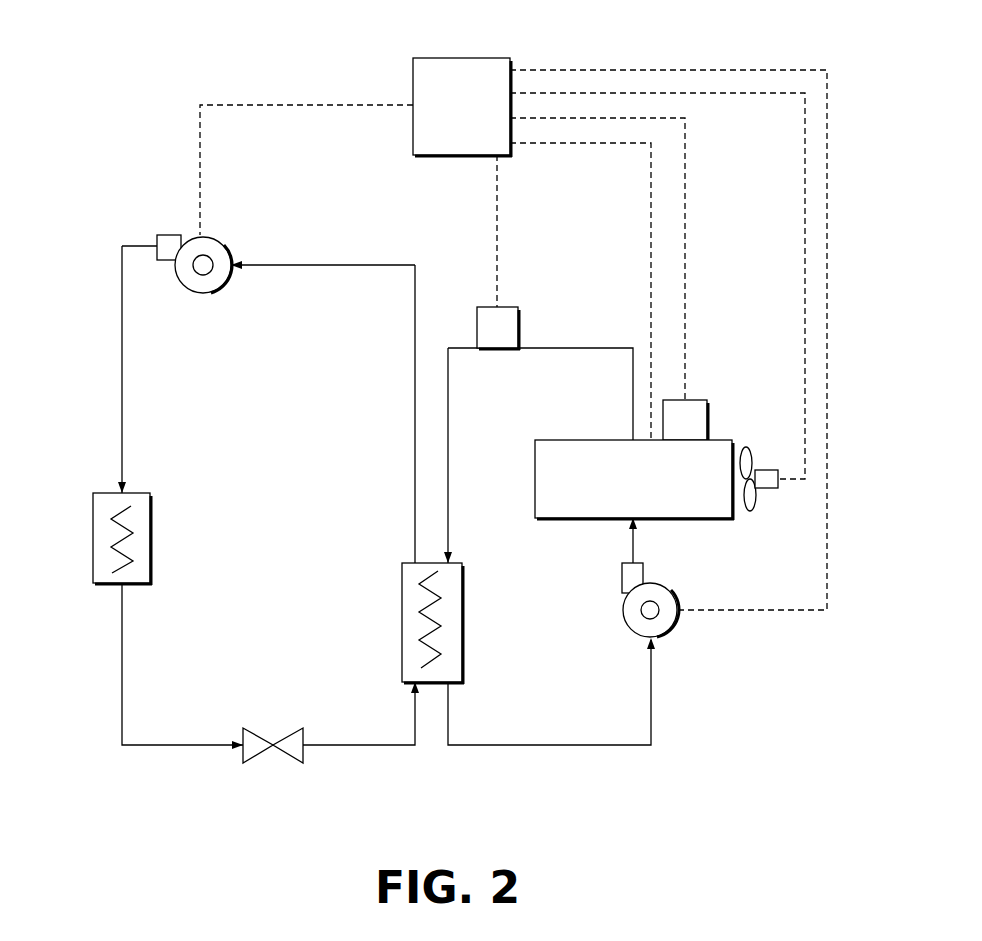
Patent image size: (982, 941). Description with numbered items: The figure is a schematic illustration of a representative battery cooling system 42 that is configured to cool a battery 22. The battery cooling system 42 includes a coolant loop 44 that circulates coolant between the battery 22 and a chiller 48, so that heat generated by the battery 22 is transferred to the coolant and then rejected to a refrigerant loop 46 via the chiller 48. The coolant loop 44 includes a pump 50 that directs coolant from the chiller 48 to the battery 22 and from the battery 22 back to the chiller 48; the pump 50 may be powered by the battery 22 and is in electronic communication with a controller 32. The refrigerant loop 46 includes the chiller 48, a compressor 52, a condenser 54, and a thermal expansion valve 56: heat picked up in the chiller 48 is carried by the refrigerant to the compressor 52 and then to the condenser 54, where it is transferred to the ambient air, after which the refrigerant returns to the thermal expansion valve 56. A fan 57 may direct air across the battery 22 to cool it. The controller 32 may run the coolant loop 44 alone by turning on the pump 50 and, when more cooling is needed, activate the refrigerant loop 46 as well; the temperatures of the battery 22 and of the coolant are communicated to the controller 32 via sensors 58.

The battery cooling system 42 is at (163, 44).
The controller 32 is at (460, 58).
The compressor 52 is at (222, 240).
The refrigerant loop 46 is at (182, 755).
The condenser 54 is at (93, 538).
The thermal expansion valve 56 is at (260, 733).
The chiller 48 is at (402, 620).
The coolant loop 44 is at (505, 755).
The sensors 58 is at (510, 307).
The battery 22 is at (535, 480).
The pump 50 is at (622, 610).
The fan 57 is at (767, 490).